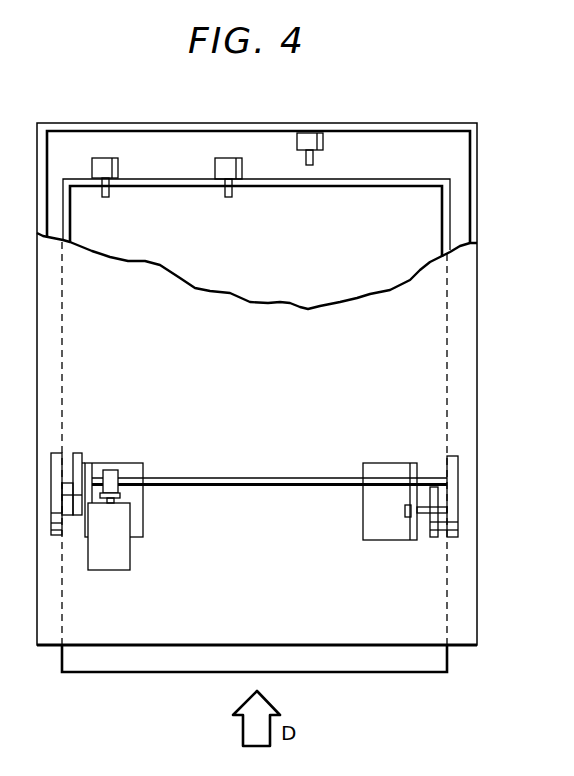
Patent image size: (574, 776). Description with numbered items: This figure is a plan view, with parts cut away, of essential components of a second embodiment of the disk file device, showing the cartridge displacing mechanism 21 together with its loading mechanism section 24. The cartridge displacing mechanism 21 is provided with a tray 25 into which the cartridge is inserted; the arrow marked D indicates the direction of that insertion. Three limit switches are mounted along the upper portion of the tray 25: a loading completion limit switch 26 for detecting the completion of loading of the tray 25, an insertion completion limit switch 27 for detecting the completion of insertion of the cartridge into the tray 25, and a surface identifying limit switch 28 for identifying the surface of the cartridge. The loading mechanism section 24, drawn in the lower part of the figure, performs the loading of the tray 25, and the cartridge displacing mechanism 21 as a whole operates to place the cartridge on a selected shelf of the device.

The cartridge displacing mechanism 21 is at (519, 169).
The loading mechanism section 24 is at (458, 495).
The tray 25 is at (367, 179).
The loading completion limit switch 26 is at (310, 133).
The insertion completion limit switch 27 is at (230, 158).
The surface identifying limit switch 28 is at (105, 158).